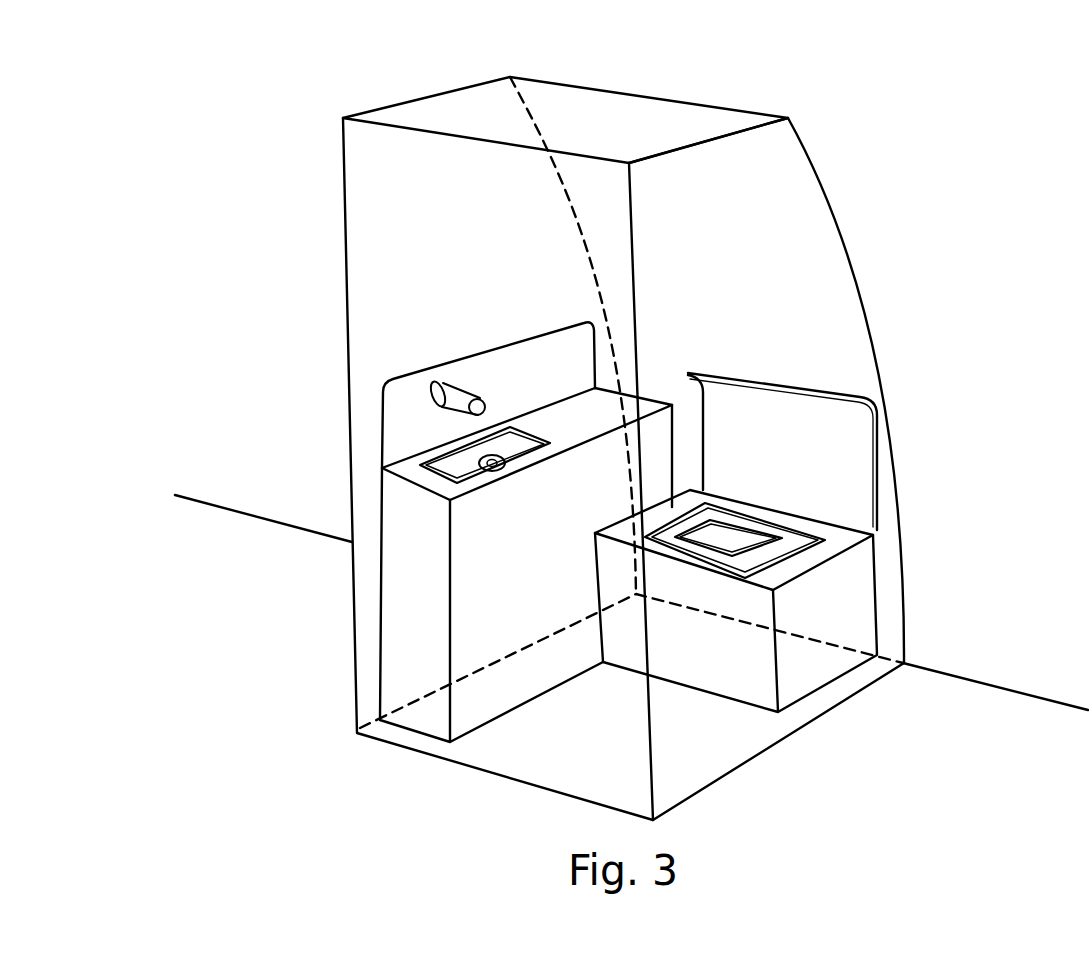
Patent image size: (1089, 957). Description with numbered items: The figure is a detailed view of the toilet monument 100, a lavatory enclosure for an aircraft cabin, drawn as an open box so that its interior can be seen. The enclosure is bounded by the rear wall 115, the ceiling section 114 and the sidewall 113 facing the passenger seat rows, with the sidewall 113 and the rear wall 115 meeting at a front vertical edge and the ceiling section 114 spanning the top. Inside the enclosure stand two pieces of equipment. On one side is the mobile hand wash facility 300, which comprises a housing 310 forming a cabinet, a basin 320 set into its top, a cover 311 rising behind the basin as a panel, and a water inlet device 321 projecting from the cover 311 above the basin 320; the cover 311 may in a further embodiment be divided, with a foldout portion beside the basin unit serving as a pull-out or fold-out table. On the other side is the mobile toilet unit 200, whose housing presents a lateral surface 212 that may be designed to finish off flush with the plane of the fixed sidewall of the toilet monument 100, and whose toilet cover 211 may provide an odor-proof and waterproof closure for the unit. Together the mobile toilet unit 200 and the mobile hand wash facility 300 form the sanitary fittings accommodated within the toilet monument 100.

The toilet monument 100 is at (635, 133).
The sidewall 113 is at (498, 469).
The ceiling section 114 is at (565, 335).
The rear wall 115 is at (766, 469).
The mobile toilet unit 200 is at (768, 413).
The toilet cover 211 is at (850, 450).
The lateral surface 212 is at (853, 583).
The mobile hand wash facility 300 is at (647, 410).
The housing 310 is at (526, 565).
The cover 311 is at (498, 372).
The basin 320 is at (517, 450).
The water inlet device 321 is at (457, 388).